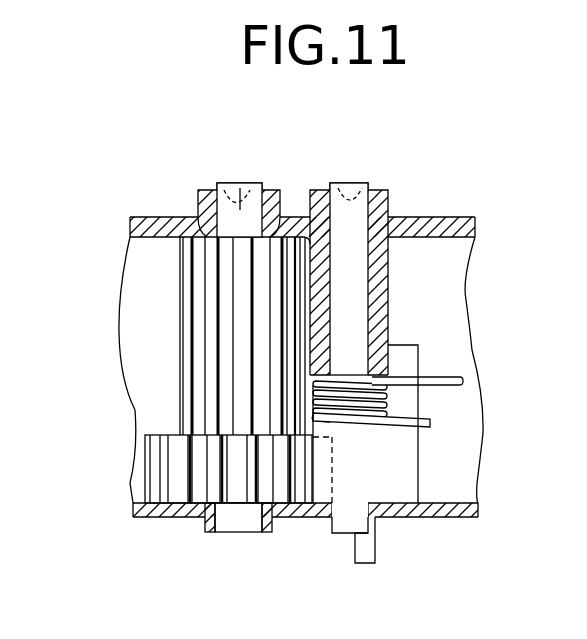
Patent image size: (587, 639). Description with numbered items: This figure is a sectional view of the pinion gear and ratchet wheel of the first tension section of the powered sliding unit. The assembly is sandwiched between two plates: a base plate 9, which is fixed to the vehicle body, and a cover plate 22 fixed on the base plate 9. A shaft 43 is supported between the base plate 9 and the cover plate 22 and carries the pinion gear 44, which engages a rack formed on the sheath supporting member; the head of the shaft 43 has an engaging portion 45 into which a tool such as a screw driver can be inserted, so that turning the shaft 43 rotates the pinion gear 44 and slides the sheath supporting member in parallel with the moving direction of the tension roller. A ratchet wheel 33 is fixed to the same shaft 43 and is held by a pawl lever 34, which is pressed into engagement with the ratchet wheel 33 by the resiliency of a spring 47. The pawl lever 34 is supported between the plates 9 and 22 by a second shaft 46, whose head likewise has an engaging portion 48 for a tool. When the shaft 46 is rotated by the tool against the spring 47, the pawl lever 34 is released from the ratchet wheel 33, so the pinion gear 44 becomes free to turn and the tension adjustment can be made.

The base plate 9 is at (443, 517).
The cover plate 22 is at (402, 216).
The ratchet wheel 33 is at (145, 472).
The pawl lever 34 is at (397, 468).
The shaft 43 is at (243, 185).
The pinion gear 44 is at (198, 315).
The engaging portion 45 is at (228, 186).
The shaft 46 is at (370, 187).
The spring 47 is at (445, 378).
The engaging portion 48 is at (352, 182).